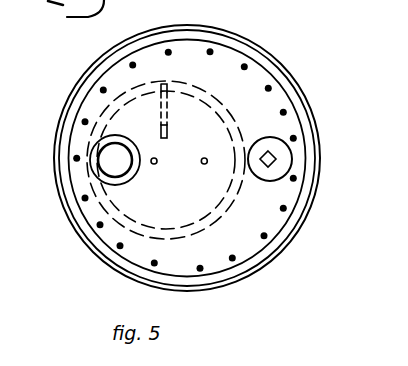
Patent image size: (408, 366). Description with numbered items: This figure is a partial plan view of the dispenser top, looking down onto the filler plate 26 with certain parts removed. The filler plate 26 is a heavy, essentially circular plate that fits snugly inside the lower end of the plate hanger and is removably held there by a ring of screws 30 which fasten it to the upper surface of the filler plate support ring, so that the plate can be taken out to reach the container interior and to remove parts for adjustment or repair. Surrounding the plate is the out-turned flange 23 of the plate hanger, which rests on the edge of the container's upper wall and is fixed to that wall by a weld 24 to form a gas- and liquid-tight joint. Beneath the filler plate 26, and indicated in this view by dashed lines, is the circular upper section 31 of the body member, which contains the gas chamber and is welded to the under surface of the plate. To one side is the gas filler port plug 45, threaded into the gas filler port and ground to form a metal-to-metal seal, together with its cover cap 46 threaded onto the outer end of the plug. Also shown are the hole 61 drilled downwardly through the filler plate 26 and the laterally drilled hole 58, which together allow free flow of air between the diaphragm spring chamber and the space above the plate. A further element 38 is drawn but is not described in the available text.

The out-turned flange 23 is at (255, 55).
The weld 24 is at (289, 72).
The filler plate 26 is at (192, 53).
The screws 30 is at (100, 90).
The upper section 31 is at (237, 127).
The drive hub 38 is at (279, 152).
The gas filler port plug 45 is at (97, 152).
The cover cap 46 is at (101, 163).
The hole 58 is at (167, 128).
The hole 61 is at (166, 84).